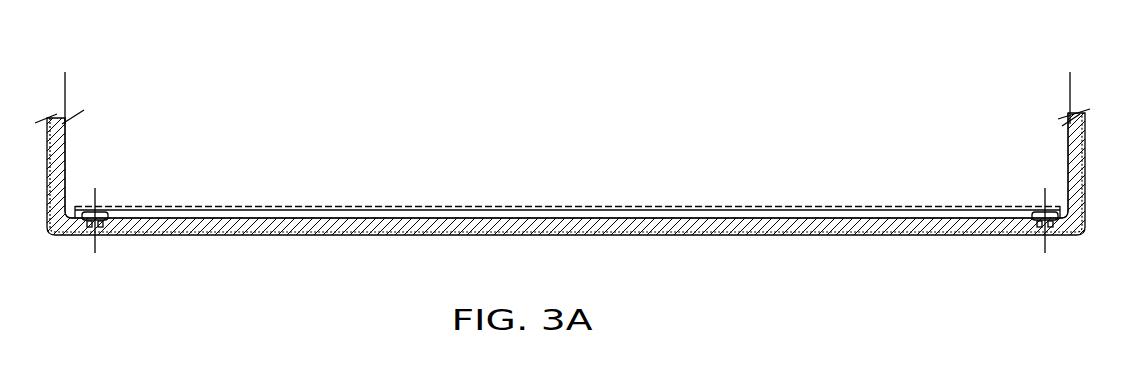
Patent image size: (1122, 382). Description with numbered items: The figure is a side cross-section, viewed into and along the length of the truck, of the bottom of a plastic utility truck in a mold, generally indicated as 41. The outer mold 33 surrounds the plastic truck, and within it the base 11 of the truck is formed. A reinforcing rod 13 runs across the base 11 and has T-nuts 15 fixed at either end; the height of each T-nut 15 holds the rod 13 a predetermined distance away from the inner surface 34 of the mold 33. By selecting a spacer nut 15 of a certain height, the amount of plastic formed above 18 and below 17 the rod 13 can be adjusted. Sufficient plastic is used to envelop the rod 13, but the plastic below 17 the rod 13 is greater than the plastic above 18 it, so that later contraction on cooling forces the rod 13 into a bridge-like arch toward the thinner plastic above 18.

The base 11 is at (707, 228).
The reinforcing rod 13 is at (283, 211).
The T-nut 15 is at (97, 221).
The plastic below the rod 17 is at (812, 228).
The plastic above the rod 18 is at (950, 207).
The outer mold 33 is at (1082, 110).
The inner surface of the mold 34 is at (568, 222).
The bottom of plastic truck in a mold 41 is at (476, 188).